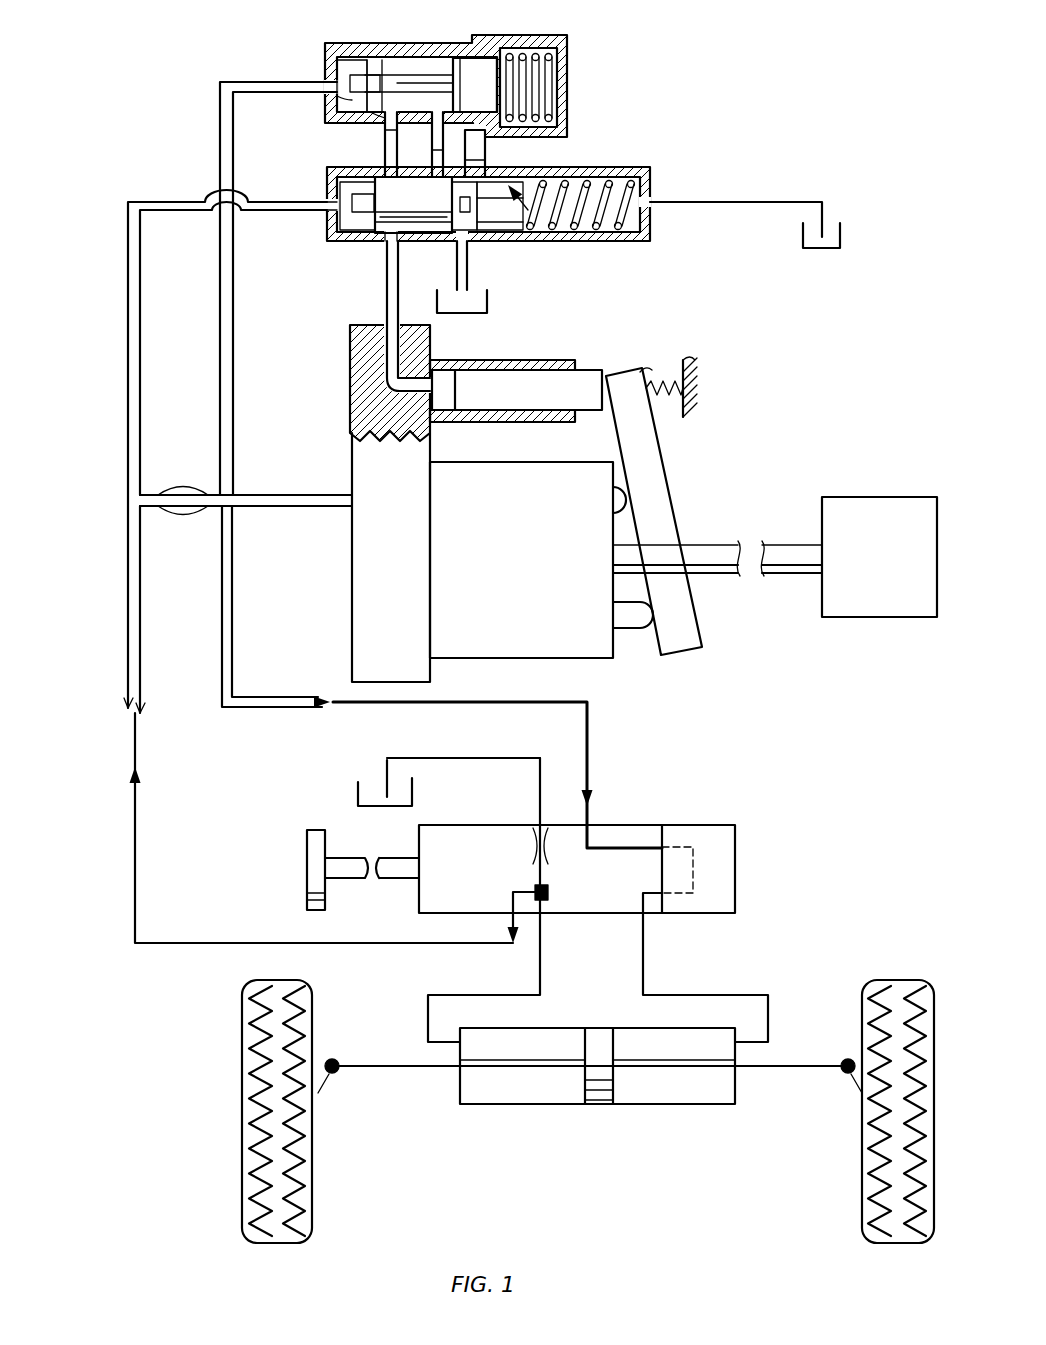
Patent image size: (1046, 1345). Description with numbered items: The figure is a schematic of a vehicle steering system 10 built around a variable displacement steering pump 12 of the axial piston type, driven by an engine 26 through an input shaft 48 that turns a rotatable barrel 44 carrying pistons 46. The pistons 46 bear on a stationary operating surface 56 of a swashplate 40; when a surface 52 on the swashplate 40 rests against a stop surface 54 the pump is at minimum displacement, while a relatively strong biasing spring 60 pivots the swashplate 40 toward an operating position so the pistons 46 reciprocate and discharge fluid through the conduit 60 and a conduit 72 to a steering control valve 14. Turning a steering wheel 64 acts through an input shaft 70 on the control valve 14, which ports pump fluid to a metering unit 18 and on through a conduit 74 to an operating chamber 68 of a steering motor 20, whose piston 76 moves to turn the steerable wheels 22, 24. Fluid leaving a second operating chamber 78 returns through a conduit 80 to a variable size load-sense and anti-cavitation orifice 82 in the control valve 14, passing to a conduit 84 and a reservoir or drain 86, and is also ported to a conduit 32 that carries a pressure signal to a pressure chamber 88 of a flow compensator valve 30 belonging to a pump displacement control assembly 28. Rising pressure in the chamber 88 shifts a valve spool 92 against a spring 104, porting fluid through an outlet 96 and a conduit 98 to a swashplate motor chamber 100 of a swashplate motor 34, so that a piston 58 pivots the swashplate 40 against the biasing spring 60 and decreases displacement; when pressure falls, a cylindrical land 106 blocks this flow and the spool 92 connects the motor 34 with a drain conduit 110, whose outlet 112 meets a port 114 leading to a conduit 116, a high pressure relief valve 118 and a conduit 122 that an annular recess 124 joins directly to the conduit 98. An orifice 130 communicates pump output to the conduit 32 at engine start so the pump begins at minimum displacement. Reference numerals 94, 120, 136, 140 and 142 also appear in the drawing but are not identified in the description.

The steering system 10 is at (800, 75).
The variable displacement steering pump 12 is at (695, 706).
The steering control valve 14 is at (405, 901).
The metering unit 18 is at (735, 862).
The steering motor 20 is at (676, 1120).
The steerable wheel 22 is at (265, 1112).
The steerable wheel 24 is at (905, 1243).
The engine 26 is at (866, 500).
The pump displacement control assembly 28 is at (672, 78).
The flow compensator valve 30 is at (680, 237).
The conduit 32 is at (128, 630).
The swashplate motor 34 is at (590, 352).
The swashplate 40 is at (662, 474).
The rotatable barrel 44 is at (492, 570).
The pistons 46 is at (628, 508).
The input shaft 48 is at (755, 536).
The surface 52 is at (644, 372).
The stop surface 54 is at (692, 362).
The stationary operating surface 56 is at (652, 638).
The swashplate motor piston 58 is at (520, 385).
The biasing spring 60 is at (285, 495).
The steering wheel 64 is at (307, 870).
The operating chamber 68 is at (720, 1090).
The input shaft 70 is at (380, 845).
The conduit 72 is at (232, 636).
The conduit 74 is at (648, 950).
The piston 76 is at (598, 1104).
The second operating chamber 78 is at (475, 1085).
The conduit 80 is at (545, 950).
The load-sense and anti-cavitation orifice 82 is at (548, 838).
The conduit 84 is at (455, 760).
The reservoir 86 is at (358, 794).
The pressure chamber 88 is at (337, 222).
The valve spool 92 is at (487, 172).
The return line 94 is at (645, 185).
The outlet 96 is at (397, 250).
The conduit 98 is at (386, 302).
The swashplate motor chamber 100 is at (441, 385).
The spring 104 is at (592, 242).
The cylindrical land 106 is at (366, 242).
The drain conduit 110 is at (470, 280).
The outlet 112 is at (480, 242).
The port 114 is at (428, 182).
The conduit 116 is at (432, 140).
The high pressure relief valve 118 is at (582, 72).
The inlet port 120 is at (337, 100).
The conduit 122 is at (372, 118).
The annular recess 124 is at (385, 150).
The orifice 130 is at (187, 492).
The conduit 136 is at (233, 368).
The pilot spool 140 is at (406, 70).
The pilot spring 142 is at (527, 52).